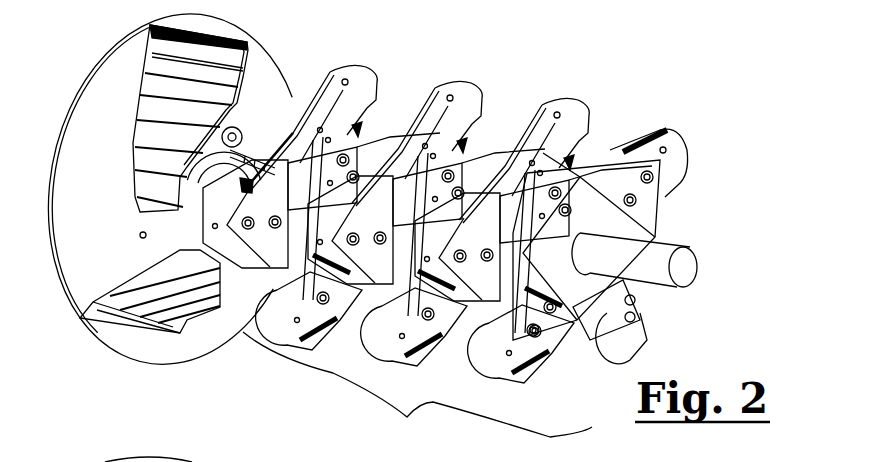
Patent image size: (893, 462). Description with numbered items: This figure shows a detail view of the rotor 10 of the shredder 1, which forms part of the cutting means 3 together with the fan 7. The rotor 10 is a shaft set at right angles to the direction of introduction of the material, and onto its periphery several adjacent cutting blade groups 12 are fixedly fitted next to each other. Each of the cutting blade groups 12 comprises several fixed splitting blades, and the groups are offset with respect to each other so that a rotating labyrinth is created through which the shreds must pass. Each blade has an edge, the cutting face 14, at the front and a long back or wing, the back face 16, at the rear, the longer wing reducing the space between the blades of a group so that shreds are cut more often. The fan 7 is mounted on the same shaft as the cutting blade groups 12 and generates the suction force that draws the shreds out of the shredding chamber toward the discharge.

The shredder 1 is at (395, 232).
The cutting means 3 is at (473, 234).
The fan 7 is at (137, 320).
The rotor 10 is at (692, 265).
The cutting blade groups 12 is at (473, 201).
The cutting face 14 is at (312, 159).
The back face 16 is at (355, 55).